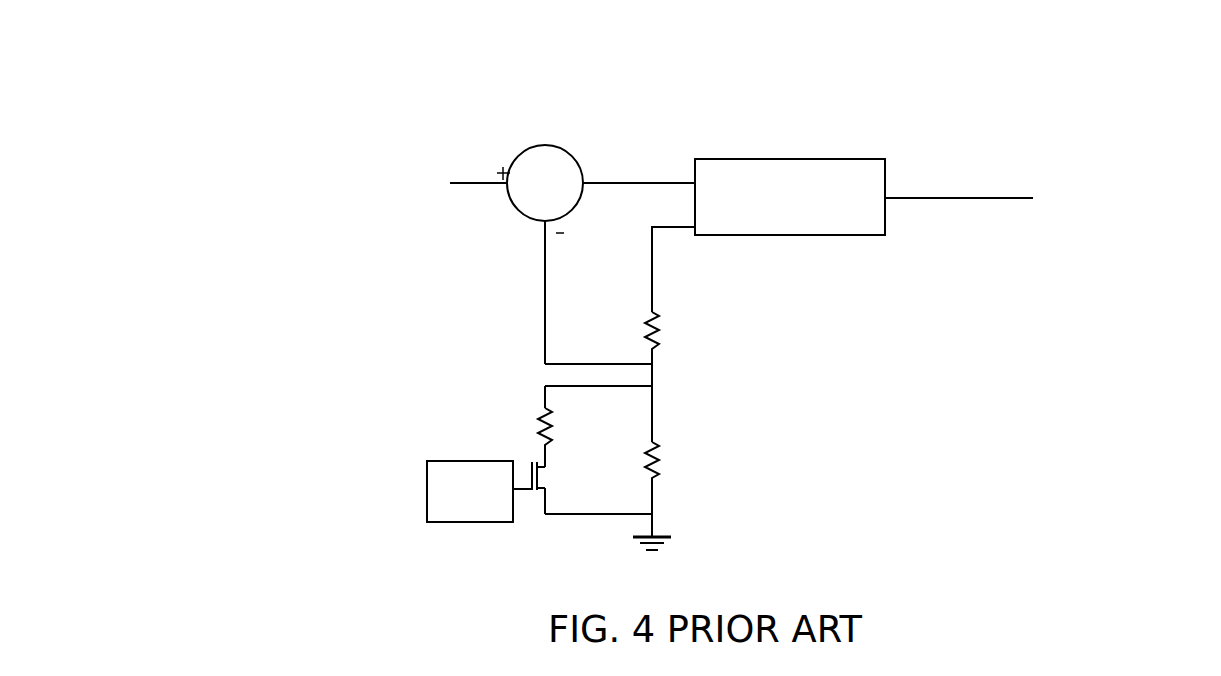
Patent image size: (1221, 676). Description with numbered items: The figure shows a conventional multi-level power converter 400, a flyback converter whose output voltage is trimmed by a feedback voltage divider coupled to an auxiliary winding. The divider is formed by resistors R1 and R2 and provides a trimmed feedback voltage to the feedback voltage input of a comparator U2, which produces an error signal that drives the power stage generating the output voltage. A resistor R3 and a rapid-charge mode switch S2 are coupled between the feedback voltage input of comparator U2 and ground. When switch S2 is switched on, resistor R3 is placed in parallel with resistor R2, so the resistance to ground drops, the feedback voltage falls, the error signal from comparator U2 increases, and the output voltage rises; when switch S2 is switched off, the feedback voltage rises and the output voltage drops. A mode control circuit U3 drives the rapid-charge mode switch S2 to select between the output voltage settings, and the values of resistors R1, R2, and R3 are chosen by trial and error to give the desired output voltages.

The multi-level power converter 400 is at (322, 48).
The comparator U2 is at (552, 176).
The mode control circuit U3 is at (448, 491).
The resistor R1 is at (670, 330).
The resistor R2 is at (671, 461).
The resistor R3 is at (565, 427).
The rapid-charge mode switch S2 is at (552, 476).